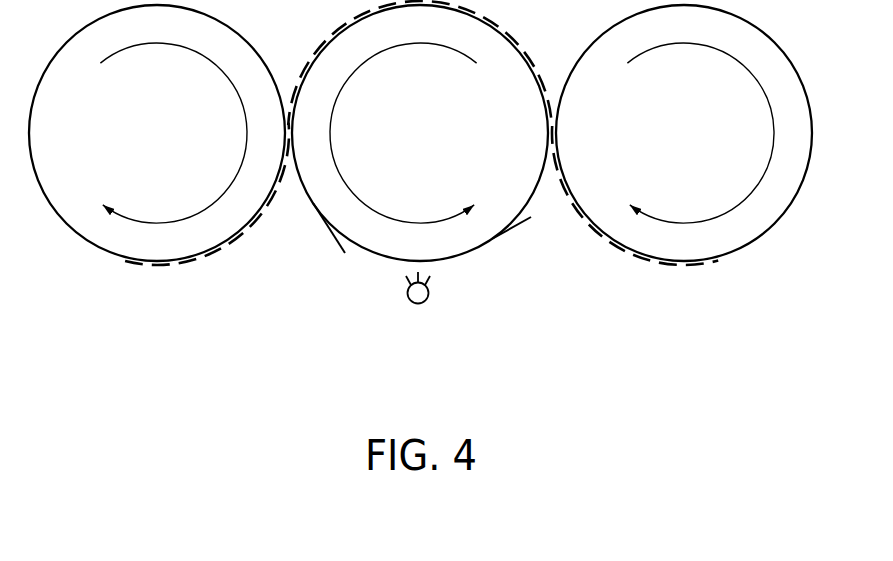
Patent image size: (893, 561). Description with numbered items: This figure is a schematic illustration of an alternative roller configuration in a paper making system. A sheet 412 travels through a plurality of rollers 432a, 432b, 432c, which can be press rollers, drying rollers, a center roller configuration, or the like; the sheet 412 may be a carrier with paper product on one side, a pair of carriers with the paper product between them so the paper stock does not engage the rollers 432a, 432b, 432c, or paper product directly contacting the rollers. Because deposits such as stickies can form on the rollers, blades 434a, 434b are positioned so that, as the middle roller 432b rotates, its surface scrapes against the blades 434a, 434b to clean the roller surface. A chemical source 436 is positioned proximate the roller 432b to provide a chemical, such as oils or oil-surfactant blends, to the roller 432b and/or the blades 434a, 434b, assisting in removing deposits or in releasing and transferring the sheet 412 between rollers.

The sheet 412 is at (148, 265).
The roller 432a is at (182, 147).
The roller 432b is at (445, 147).
The roller 432c is at (707, 147).
The blade 434a is at (333, 243).
The blade 434b is at (525, 220).
The chemical source 436 is at (416, 291).